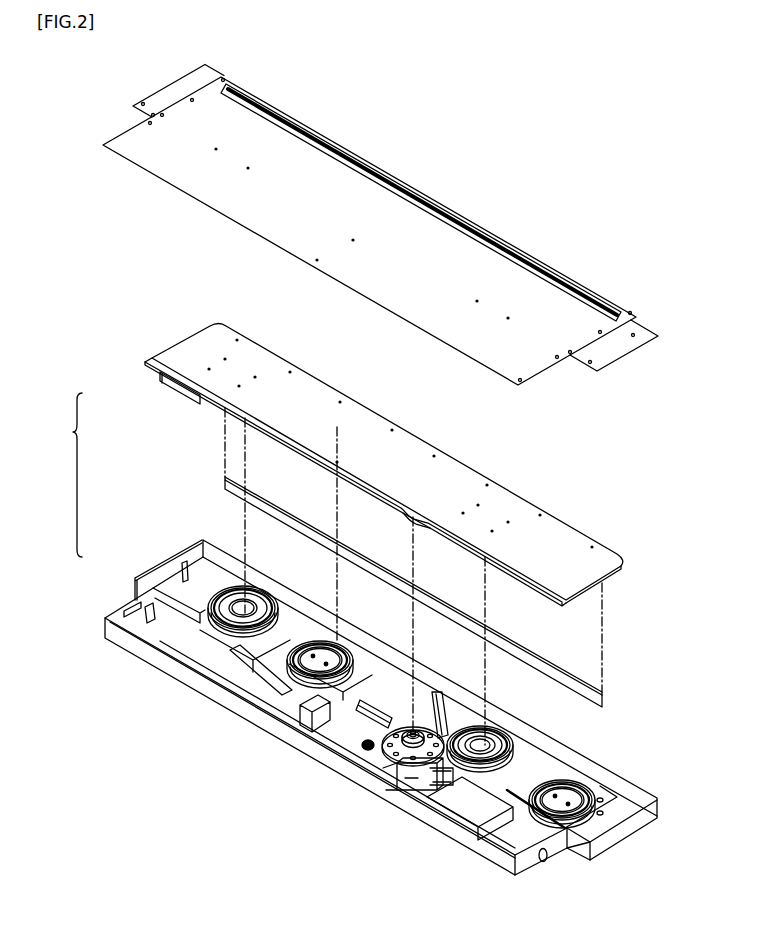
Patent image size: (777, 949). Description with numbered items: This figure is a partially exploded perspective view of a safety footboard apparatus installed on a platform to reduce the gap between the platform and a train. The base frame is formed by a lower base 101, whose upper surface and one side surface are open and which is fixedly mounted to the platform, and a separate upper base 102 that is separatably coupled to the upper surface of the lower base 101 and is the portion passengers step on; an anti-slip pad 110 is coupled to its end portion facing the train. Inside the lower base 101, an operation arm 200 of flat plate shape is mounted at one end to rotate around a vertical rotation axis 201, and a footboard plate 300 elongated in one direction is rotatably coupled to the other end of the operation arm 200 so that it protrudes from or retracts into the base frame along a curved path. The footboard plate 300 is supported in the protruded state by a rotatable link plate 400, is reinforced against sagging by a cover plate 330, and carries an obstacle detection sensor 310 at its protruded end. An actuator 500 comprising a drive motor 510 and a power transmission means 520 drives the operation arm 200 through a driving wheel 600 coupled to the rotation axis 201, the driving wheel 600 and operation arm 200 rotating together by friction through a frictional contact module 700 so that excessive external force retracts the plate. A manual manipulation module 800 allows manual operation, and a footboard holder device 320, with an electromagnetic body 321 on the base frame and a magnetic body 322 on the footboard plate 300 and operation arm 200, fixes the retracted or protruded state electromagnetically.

The lower base 101 is at (180, 675).
The upper base 102 is at (178, 168).
The anti-slip pad 110 is at (445, 205).
The operation arm 200 is at (308, 710).
The rotation axis 201 is at (383, 768).
The footboard plate 300 is at (185, 342).
The obstacle detection sensor 310 is at (468, 463).
The footboard holder device 320 is at (622, 766).
The electromagnetic body 321 is at (153, 585).
The magnetic body 322 is at (160, 377).
The cover plate 330 is at (605, 697).
The rotatable link plate 400 is at (288, 627).
The actuator 500 is at (417, 900).
The drive motor 510 is at (452, 815).
The power transmission means 520 is at (411, 778).
The driving wheel 600 is at (386, 790).
The frictional contact module 700 is at (447, 720).
The manual manipulation module 800 is at (357, 748).